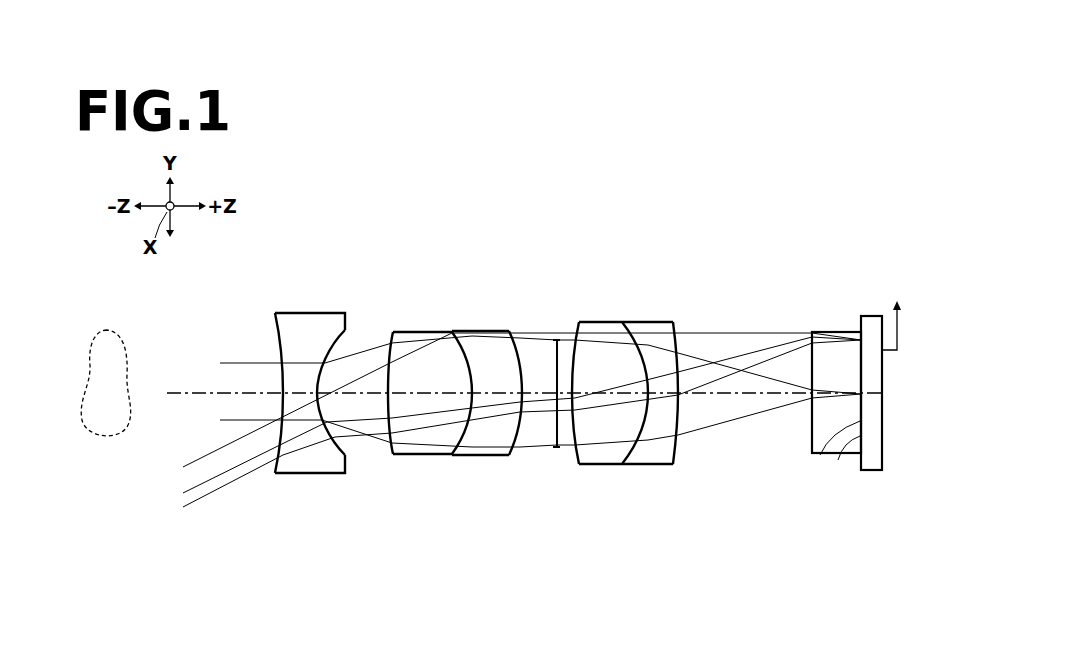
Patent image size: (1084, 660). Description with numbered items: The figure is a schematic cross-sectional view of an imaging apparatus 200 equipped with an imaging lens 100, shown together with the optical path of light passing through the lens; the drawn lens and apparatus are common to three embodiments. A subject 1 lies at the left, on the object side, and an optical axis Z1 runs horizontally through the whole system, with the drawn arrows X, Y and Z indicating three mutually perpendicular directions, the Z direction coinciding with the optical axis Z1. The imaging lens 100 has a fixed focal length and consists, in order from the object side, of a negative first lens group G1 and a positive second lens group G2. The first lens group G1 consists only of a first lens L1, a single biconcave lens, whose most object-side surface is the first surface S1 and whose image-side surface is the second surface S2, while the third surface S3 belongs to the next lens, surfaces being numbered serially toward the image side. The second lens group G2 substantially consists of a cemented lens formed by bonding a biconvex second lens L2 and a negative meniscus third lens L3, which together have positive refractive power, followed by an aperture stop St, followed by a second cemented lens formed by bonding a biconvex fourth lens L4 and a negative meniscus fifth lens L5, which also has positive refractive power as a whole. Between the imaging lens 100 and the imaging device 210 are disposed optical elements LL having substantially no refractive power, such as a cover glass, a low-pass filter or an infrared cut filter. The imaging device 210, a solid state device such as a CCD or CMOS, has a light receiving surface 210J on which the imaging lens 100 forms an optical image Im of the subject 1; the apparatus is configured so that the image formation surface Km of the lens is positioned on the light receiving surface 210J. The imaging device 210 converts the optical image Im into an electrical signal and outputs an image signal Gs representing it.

The subject 1 is at (101, 330).
The imaging lens 100 is at (292, 206).
The imaging apparatus 200 is at (670, 168).
The optical axis Z1 is at (185, 392).
The first lens group G1 is at (310, 260).
The second lens group G2 is at (407, 237).
The first lens L1 is at (310, 312).
The second lens L2 is at (424, 331).
The third lens L3 is at (483, 330).
The fourth lens L4 is at (583, 321).
The fifth lens L5 is at (642, 321).
The first surface S1 is at (277, 463).
The second surface S2 is at (354, 450).
The third surface S3 is at (390, 432).
The aperture stop St is at (552, 338).
The optical elements LL is at (832, 346).
The image formation surface Km is at (820, 455).
The optical image Im is at (838, 460).
The imaging device 210 is at (870, 313).
The light receiving surface 210J is at (860, 470).
The image signal Gs is at (907, 327).